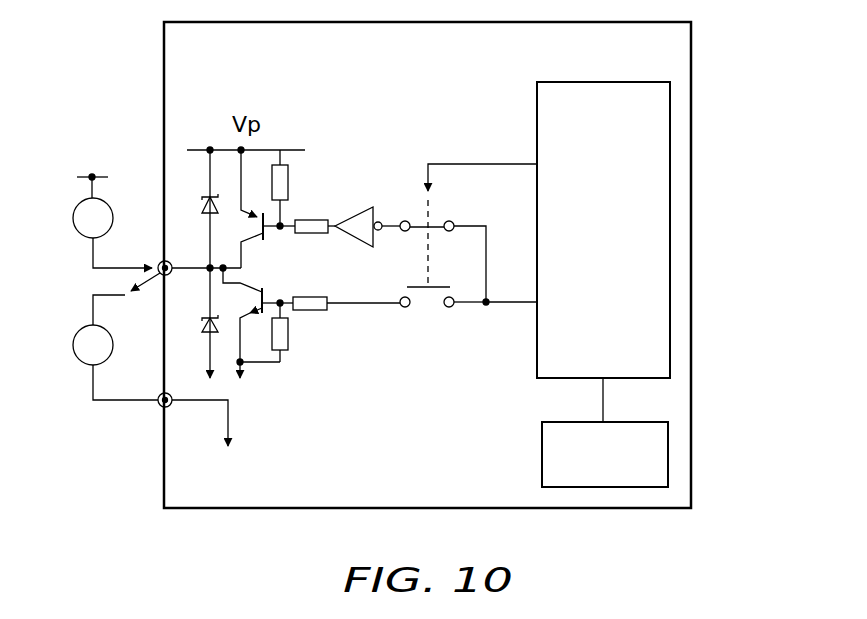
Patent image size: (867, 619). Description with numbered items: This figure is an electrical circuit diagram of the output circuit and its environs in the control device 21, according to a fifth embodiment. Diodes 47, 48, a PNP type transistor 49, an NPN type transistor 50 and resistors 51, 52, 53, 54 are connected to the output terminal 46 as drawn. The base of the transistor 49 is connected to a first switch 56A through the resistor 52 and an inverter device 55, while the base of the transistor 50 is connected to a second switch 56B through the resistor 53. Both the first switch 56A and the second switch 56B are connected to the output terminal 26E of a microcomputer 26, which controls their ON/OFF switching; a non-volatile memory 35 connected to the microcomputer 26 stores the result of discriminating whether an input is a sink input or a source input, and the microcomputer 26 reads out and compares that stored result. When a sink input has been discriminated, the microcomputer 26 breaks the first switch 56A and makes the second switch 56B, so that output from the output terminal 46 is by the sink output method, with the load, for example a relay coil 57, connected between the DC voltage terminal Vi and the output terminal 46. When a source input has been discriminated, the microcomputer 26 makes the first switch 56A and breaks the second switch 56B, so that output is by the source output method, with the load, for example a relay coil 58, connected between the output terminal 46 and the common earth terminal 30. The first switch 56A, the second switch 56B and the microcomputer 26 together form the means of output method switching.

The control device 21 is at (273, 510).
The microcomputer 26 is at (537, 120).
The output terminal of microcomputer 26E is at (536, 298).
The common earth terminal 30 is at (160, 406).
The non-volatile memory 35 is at (541, 458).
The output terminal 46 is at (160, 262).
The diode 47 is at (201, 205).
The diode 48 is at (204, 335).
The PNP type transistor 49 is at (259, 203).
The NPN type transistor 50 is at (251, 330).
The resistor 51 is at (290, 182).
The resistor 52 is at (312, 218).
The resistor 53 is at (317, 312).
The resistor 54 is at (288, 340).
The inverter device 55 is at (352, 215).
The first switch 56A is at (439, 216).
The second switch 56B is at (427, 312).
The relay coil 57 is at (75, 210).
The relay coil 58 is at (78, 333).